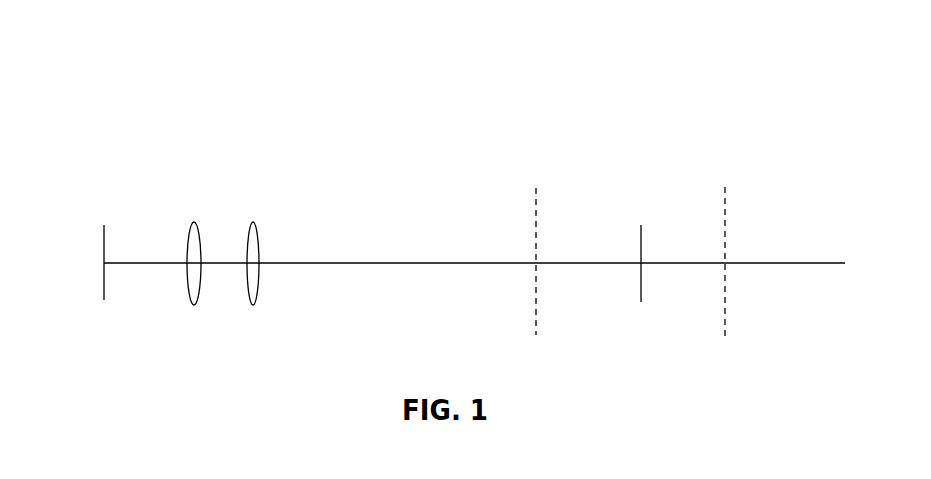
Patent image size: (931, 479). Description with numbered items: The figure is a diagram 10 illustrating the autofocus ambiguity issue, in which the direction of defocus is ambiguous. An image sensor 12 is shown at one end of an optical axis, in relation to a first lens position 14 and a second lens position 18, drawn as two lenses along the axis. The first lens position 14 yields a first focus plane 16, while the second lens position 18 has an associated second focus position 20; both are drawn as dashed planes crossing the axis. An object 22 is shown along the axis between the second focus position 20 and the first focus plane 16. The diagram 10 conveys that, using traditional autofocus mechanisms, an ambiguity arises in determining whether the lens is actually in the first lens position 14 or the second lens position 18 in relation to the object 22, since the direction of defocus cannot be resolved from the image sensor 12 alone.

The diagram 10 is at (145, 101).
The image sensor 12 is at (104, 246).
The first lens position 14 is at (194, 305).
The second lens position 18 is at (253, 305).
The second focus position 20 is at (538, 281).
The object 22 is at (641, 246).
The first focus plane 16 is at (727, 305).